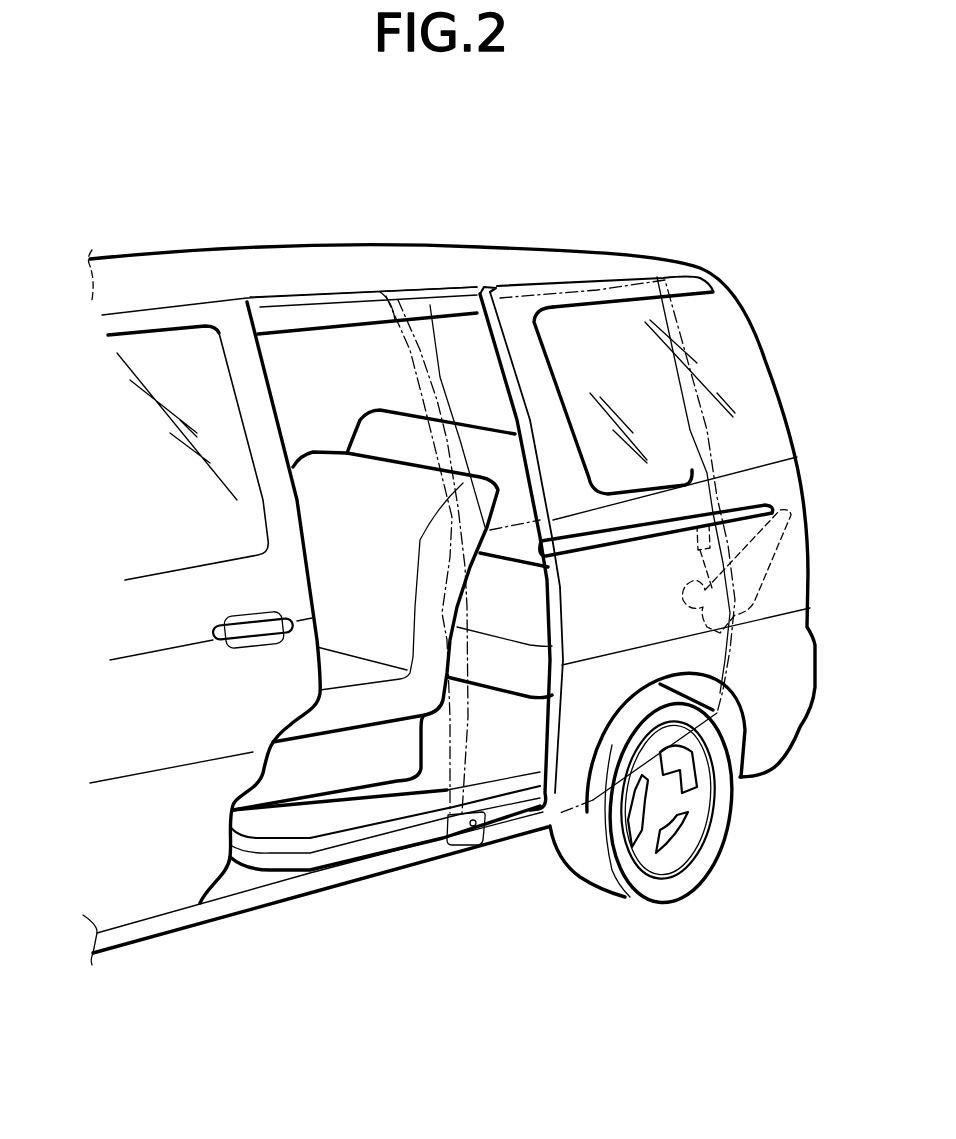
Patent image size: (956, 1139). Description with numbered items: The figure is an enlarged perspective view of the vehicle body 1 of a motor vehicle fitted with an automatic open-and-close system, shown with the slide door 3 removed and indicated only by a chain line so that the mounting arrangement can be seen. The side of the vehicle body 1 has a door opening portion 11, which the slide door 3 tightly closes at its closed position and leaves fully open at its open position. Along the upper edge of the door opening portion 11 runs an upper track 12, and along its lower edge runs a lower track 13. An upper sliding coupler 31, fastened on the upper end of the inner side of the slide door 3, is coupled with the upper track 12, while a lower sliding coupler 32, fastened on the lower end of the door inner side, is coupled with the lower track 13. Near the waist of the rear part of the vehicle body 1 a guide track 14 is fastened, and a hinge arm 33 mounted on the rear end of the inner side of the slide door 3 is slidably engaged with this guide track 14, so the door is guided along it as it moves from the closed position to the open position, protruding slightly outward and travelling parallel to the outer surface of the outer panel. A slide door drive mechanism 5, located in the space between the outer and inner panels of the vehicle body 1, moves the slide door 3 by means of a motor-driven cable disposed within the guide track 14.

The vehicle body 1 is at (815, 533).
The slide door 3 is at (690, 322).
The slide door drive mechanism 5 is at (750, 590).
The door opening portion 11 is at (325, 362).
The upper track 12 is at (358, 313).
The lower track 13 is at (310, 857).
The guide track 14 is at (727, 500).
The upper sliding coupler 31 is at (380, 292).
The lower sliding coupler 32 is at (482, 847).
The hinge arm 33 is at (700, 547).